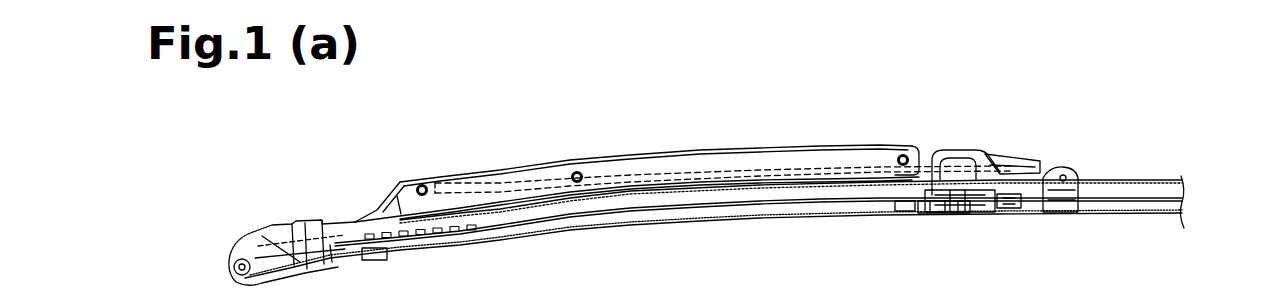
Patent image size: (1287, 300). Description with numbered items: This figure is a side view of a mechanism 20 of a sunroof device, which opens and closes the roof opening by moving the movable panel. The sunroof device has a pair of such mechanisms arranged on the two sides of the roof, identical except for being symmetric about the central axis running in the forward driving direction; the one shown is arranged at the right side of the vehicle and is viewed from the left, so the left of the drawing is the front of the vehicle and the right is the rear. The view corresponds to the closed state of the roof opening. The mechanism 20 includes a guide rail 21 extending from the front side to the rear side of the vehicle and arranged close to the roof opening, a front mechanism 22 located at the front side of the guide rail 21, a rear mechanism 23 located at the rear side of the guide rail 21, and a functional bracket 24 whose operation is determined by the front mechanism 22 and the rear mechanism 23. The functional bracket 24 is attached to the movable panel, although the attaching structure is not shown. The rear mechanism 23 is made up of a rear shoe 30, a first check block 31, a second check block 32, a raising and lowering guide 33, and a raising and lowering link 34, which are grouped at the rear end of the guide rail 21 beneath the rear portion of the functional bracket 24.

The mechanism 20 is at (768, 129).
The guide rail 21 is at (718, 225).
The front mechanism 22 is at (292, 204).
The rear mechanism 23 is at (1000, 147).
The functional bracket 24 is at (500, 168).
The rear shoe 30 is at (907, 211).
The first check block 31 is at (960, 215).
The second check block 32 is at (1003, 208).
The raising and lowering guide 33 is at (985, 153).
The raising and lowering link 34 is at (1043, 166).